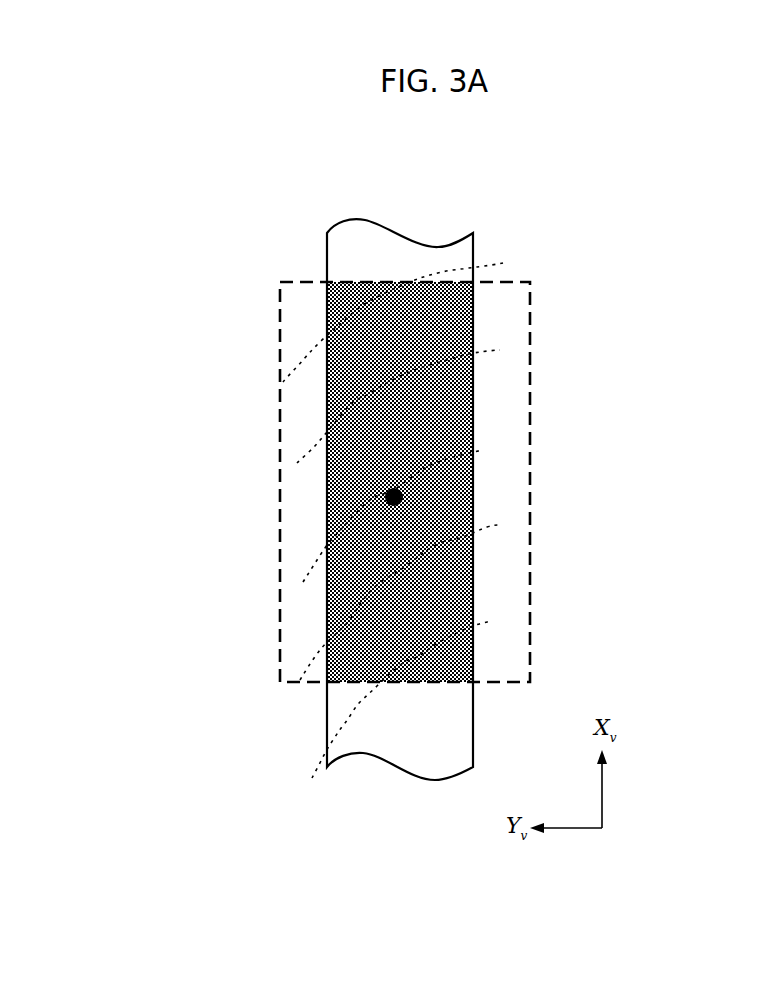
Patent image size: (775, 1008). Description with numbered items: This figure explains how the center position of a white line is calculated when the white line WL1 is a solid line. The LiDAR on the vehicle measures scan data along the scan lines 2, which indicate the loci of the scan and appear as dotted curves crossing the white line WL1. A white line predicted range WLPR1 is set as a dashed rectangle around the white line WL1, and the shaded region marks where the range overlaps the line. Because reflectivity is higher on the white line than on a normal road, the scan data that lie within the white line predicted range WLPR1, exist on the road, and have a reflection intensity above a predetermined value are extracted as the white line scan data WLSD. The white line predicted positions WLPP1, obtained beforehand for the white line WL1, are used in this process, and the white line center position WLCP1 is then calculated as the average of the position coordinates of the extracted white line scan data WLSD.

The scan lines 2 is at (300, 457).
The white line WL1 is at (374, 239).
The white line scan data WLSD is at (327, 296).
The white line predicted range WLPR1 is at (530, 340).
The white line center position WLCP1 is at (395, 490).
The white line predicted position WLPP1 is at (397, 506).